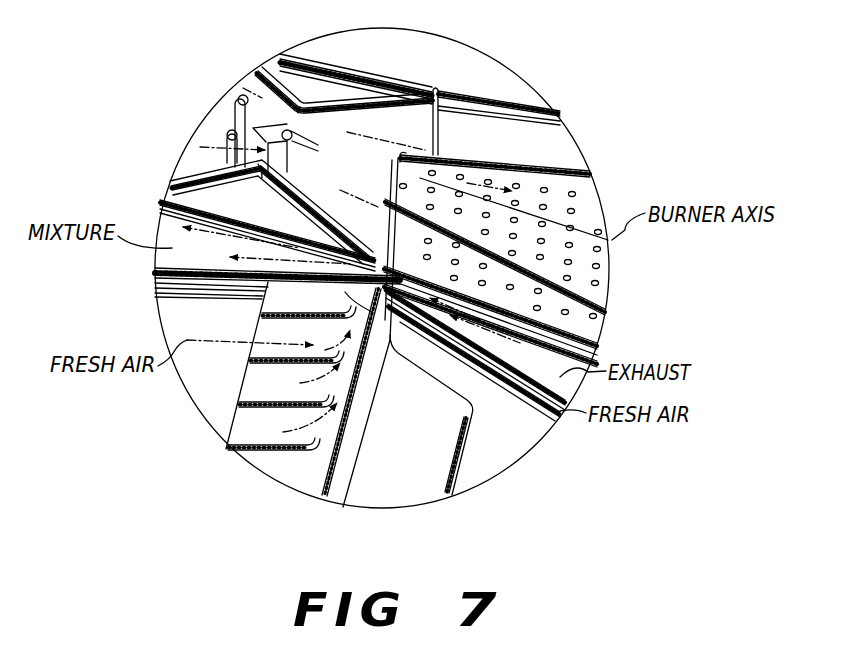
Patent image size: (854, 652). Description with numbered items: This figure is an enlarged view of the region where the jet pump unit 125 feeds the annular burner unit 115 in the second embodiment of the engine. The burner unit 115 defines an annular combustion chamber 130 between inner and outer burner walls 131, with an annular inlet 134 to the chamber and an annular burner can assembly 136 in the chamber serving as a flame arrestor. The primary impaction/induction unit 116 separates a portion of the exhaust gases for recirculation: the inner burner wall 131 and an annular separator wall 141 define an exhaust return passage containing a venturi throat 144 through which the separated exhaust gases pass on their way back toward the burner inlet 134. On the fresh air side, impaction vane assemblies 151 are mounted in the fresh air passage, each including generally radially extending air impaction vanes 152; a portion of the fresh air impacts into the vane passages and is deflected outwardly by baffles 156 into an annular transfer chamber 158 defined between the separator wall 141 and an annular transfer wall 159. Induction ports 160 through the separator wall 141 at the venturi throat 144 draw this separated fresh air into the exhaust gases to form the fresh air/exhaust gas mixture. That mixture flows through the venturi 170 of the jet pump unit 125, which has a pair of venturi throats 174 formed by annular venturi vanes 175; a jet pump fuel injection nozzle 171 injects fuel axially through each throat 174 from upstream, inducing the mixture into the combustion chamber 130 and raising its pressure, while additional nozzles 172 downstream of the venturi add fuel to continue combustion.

The annular burner unit 115 is at (540, 103).
The primary impaction/induction unit 116 is at (330, 502).
The jet pump unit 125 is at (313, 75).
The annular combustion chamber 130 is at (552, 136).
The burner walls 131 is at (513, 100).
The annular inlet 134 is at (420, 108).
The annular burner can assembly 136 is at (517, 166).
The annular separator wall 141 is at (566, 397).
The venturi throat 144 is at (390, 348).
The impaction vane assemblies 151 is at (226, 424).
The air impaction vanes 152 is at (283, 470).
The baffles 156 is at (297, 363).
The annular transfer chamber 158 is at (483, 368).
The annular transfer wall 159 is at (540, 417).
The induction ports 160 is at (350, 302).
The venturi 170 is at (311, 122).
The jet pump fuel injection nozzle 171 is at (229, 135).
The nozzles 172 is at (306, 151).
The venturi throats 174 is at (300, 107).
The annular venturi vanes 175 is at (294, 137).